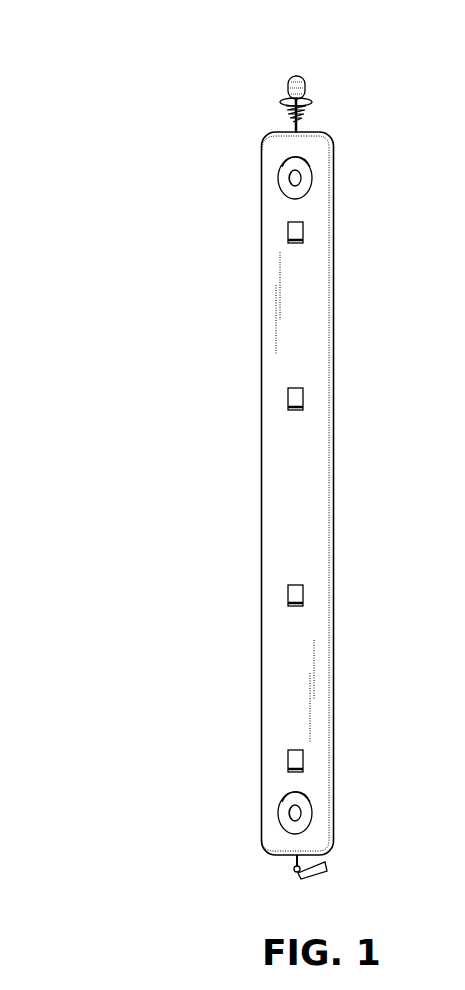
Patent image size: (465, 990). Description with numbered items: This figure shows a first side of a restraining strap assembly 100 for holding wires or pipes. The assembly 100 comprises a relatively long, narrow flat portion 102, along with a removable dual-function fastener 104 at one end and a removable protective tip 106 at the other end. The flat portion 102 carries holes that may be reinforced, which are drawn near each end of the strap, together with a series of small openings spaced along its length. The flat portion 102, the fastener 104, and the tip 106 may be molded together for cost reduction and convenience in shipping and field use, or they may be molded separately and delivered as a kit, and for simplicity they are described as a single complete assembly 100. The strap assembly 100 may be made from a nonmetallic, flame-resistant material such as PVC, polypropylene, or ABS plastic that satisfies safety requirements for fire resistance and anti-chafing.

The restraining strap assembly 100 is at (112, 84).
The flat portion 102 is at (333, 337).
The removable dual-function fastener 104 is at (308, 84).
The removable protective tip 106 is at (332, 865).